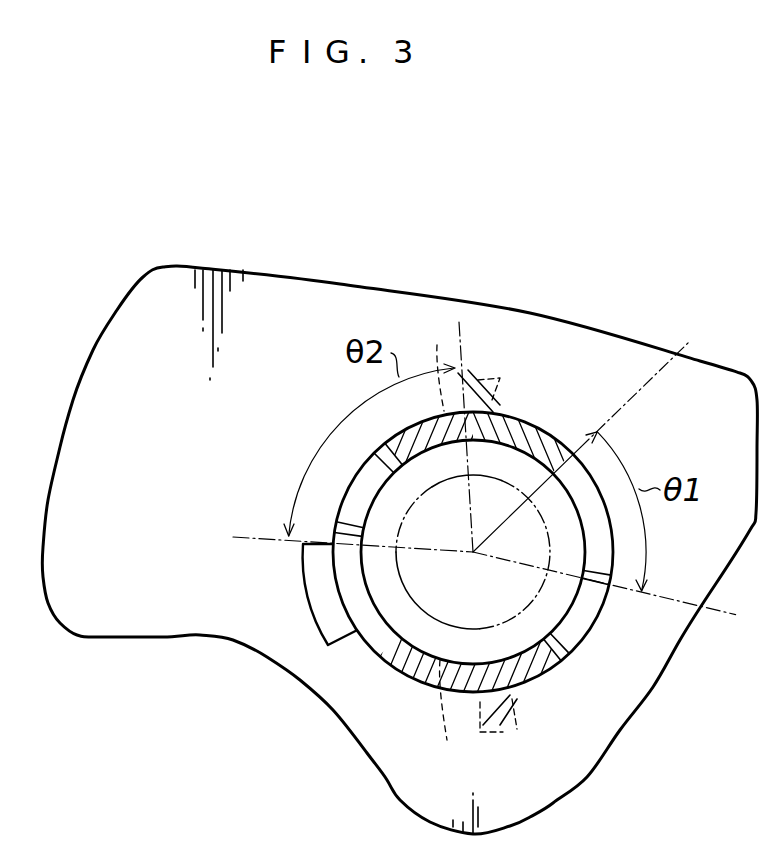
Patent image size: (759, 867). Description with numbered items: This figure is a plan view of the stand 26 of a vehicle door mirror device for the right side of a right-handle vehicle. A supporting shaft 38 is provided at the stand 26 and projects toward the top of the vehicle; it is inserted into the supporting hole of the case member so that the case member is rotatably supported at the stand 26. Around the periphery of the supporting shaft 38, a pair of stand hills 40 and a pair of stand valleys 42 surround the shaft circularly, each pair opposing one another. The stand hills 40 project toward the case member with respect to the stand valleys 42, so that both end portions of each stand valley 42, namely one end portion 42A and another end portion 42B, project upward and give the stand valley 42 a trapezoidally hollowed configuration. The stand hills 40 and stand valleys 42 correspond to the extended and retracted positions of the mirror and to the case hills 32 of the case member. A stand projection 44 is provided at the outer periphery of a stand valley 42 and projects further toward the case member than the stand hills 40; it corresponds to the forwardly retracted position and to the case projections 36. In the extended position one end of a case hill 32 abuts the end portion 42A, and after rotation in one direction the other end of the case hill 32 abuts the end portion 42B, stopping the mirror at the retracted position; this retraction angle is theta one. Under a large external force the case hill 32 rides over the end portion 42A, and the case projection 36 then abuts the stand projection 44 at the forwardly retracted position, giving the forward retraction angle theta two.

The stand 26 is at (447, 200).
The case hill 32 is at (439, 547).
The case projection 36 is at (490, 400).
The supporting shaft 38 is at (596, 614).
The stand hill 40 is at (370, 483).
The stand valley 42 is at (567, 468).
The one end portion 42A is at (376, 449).
The other end portion 42B is at (334, 519).
The stand projection 44 is at (320, 582).